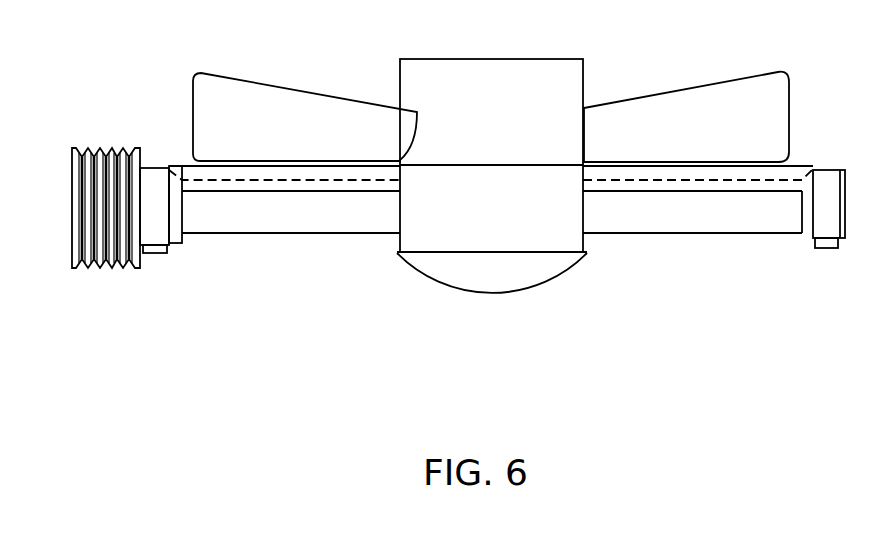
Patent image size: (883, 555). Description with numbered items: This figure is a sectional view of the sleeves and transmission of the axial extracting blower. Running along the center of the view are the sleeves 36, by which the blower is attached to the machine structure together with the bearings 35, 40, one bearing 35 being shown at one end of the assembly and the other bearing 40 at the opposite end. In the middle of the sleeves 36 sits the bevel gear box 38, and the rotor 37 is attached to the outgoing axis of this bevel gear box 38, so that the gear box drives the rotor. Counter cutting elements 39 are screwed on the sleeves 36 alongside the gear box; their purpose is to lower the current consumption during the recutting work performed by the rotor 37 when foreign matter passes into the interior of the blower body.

The bearing 35 is at (156, 183).
The sleeves 36 is at (246, 219).
The rotor 37 is at (322, 120).
The bevel gear box 38 is at (458, 195).
The counter cutting elements 39 is at (638, 183).
The bearing 40 is at (830, 178).